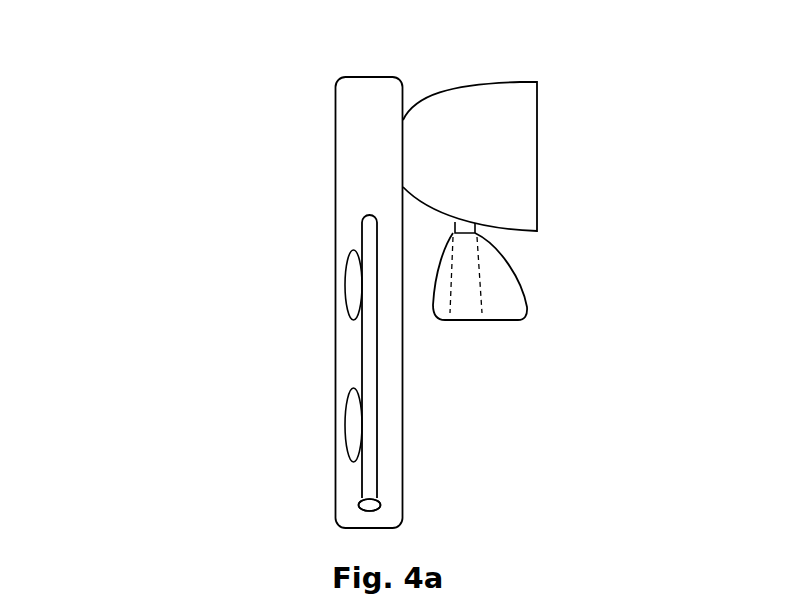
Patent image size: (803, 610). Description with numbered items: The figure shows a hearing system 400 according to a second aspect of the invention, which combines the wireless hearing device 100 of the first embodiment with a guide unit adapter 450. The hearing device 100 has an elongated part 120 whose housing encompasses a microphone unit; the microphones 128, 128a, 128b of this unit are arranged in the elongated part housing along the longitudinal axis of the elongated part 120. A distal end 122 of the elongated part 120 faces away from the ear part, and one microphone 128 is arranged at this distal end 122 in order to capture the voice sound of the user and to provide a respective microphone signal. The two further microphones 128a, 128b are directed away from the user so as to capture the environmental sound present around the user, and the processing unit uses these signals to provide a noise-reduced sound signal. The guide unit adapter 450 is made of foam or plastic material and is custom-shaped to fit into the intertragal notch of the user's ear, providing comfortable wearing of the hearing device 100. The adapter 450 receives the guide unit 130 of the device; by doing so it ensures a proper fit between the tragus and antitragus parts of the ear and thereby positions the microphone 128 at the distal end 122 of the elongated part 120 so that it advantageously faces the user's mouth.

The hearing system 400 is at (152, 61).
The wireless hearing device 100 is at (335, 192).
The elongated part 120 is at (345, 342).
The microphone 128b is at (345, 312).
The microphone 128a is at (345, 455).
The distal end 122 is at (357, 508).
The microphone 128 is at (380, 508).
The guide unit 130 is at (483, 290).
The guide unit adapter 450 is at (522, 283).